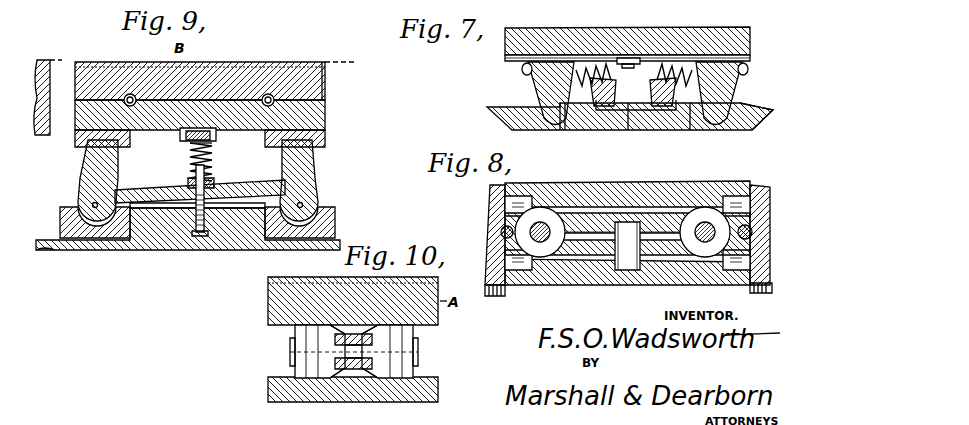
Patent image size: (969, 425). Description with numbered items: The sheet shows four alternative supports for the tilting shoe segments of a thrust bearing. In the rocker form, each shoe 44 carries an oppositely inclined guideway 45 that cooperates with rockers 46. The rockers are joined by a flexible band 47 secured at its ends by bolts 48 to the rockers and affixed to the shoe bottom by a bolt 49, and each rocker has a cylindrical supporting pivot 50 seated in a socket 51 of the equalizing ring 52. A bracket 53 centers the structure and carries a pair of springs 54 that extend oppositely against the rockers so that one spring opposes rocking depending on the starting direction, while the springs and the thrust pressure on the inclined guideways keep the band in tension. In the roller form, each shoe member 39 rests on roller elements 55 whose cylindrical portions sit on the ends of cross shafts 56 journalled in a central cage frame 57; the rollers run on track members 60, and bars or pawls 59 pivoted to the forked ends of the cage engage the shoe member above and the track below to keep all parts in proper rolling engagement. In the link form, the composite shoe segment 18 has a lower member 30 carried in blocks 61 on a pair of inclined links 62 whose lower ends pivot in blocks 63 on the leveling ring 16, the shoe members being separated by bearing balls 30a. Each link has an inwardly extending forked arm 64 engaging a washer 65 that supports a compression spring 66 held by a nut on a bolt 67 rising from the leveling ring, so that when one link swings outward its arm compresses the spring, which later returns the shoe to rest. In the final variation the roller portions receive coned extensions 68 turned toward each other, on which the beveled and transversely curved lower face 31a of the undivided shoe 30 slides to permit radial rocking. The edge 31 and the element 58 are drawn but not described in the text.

In FIG. 9, the leveling ring 16 is at (172, 246).
In FIG. 9, the composite shoe segment 18 is at (332, 77).
In FIG. 9, the lower member of the shoe segment 30 is at (330, 108).
In FIG. 10, the lower member of the shoe segment 30 is at (280, 301).
In FIG. 9, the bearing balls 30a is at (270, 96).
In FIG. 9, the plate edge 31 is at (323, 62).
In FIG. 10, the lower face of the segment bearing member 31a is at (323, 326).
In FIG. 8, the shoe member 39 is at (737, 183).
In FIG. 7, the shoe 44 is at (752, 41).
In FIG. 7, the inclined guideway 45 is at (752, 58).
In FIG. 7, the rocker 46 is at (540, 88).
In FIG. 7, the flexible band 47 is at (620, 57).
In FIG. 7, the bolt 48 is at (522, 68).
In FIG. 7, the bolt 49 is at (642, 58).
In FIG. 7, the cylindrical supporting pivot 50 is at (500, 121).
In FIG. 7, the socket 51 is at (567, 108).
In FIG. 7, the equalizing ring 52 is at (752, 121).
In FIG. 7, the bracket 53 is at (634, 110).
In FIG. 7, the spring 54 is at (591, 108).
In FIG. 8, the roller element 55 is at (552, 244).
In FIG. 10, the roller element 55 is at (305, 340).
In FIG. 8, the cross shaft 56 is at (535, 259).
In FIG. 8, the cage bar or frame 57 is at (654, 256).
In FIG. 10, the cage bar or frame 57 is at (356, 366).
In FIG. 10, the sleeve 58 is at (407, 366).
In FIG. 8, the bar or pawl 59 is at (490, 237).
In FIG. 8, the track or guide member 60 is at (598, 262).
In FIG. 9, the block 61 is at (75, 134).
In FIG. 9, the link 62 is at (82, 170).
In FIG. 9, the block 63 is at (97, 232).
In FIG. 9, the arm 64 is at (137, 186).
In FIG. 9, the washer 65 is at (212, 192).
In FIG. 9, the compression spring 66 is at (190, 172).
In FIG. 9, the bolt 67 is at (199, 236).
In FIG. 10, the coned extension 68 is at (390, 337).